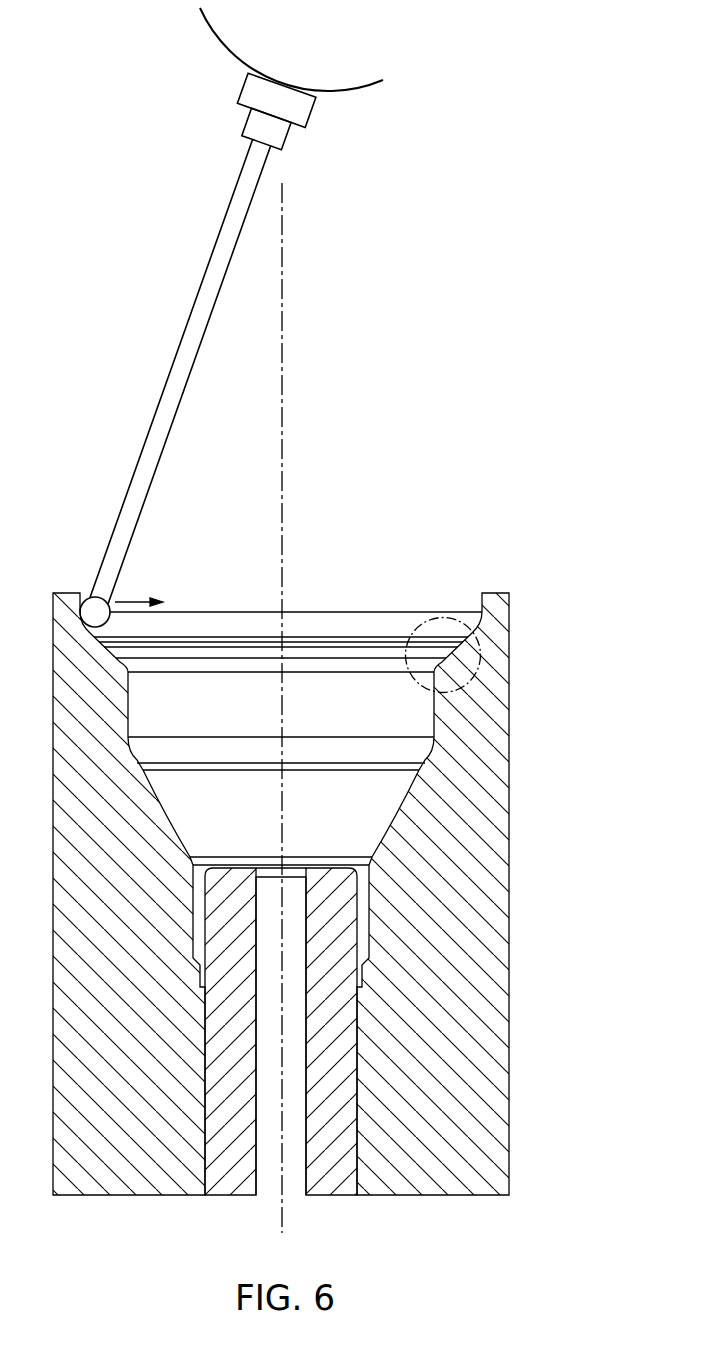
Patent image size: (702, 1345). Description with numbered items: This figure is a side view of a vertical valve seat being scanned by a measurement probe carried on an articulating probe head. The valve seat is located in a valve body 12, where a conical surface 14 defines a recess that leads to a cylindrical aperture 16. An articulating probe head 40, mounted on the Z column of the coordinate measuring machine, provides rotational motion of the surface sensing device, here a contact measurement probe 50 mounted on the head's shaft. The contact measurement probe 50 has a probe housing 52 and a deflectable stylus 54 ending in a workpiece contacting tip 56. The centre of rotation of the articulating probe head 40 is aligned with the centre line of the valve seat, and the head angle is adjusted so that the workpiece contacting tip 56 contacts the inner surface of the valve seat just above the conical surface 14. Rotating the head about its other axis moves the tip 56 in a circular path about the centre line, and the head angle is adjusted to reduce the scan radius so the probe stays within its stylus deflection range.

The valve body 12 is at (506, 623).
The conical surface 14 is at (447, 650).
The cylindrical aperture 16 is at (308, 1170).
The articulating probe head 40 is at (421, 72).
The contact measurement probe 50 is at (205, 104).
The probe housing 52 is at (288, 134).
The deflectable stylus 54 is at (178, 345).
The workpiece contacting tip 56 is at (88, 600).